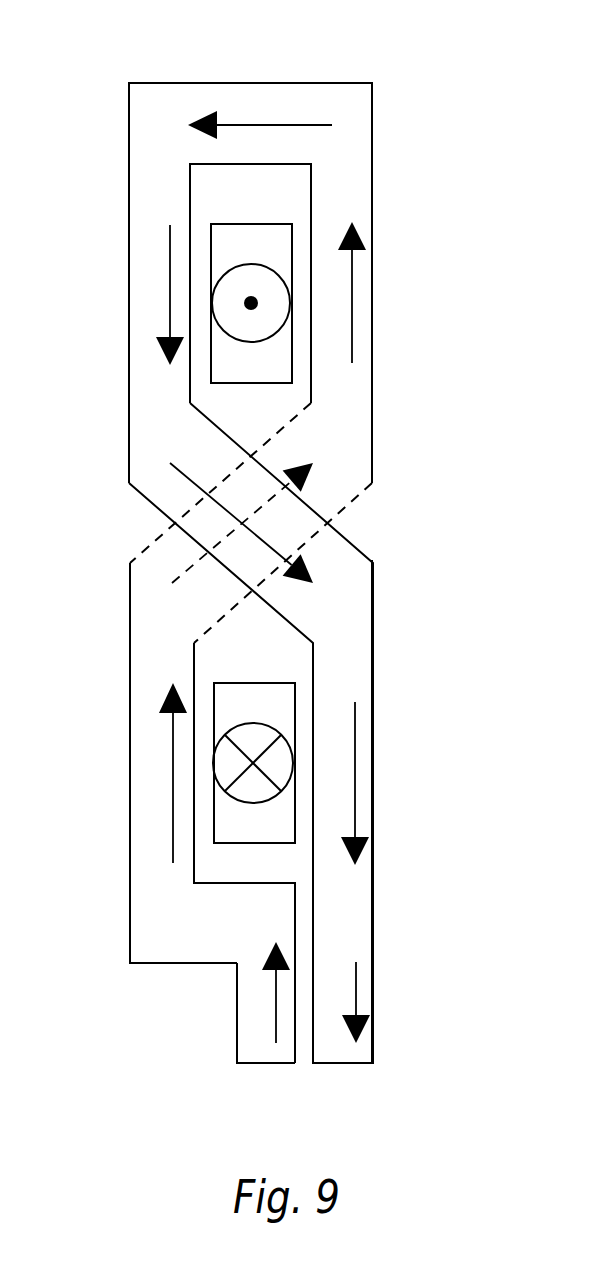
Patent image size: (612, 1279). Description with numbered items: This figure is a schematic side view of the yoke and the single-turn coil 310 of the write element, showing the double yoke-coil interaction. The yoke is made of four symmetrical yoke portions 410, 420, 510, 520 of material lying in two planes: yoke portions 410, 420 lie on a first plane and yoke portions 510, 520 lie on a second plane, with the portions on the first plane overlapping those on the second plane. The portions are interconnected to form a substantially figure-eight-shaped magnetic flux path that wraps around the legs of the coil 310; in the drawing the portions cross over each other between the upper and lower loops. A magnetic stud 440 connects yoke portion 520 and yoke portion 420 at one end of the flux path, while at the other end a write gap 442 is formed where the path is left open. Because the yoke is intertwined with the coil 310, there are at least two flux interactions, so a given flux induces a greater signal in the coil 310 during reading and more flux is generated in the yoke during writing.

The magnetic stud 440 is at (257, 88).
The yoke portion 520 is at (135, 280).
The yoke portion 420 is at (368, 281).
The single-turn coil 310 is at (272, 710).
The yoke portion 510 is at (138, 900).
The yoke portion 410 is at (372, 900).
The write gap 442 is at (308, 1057).